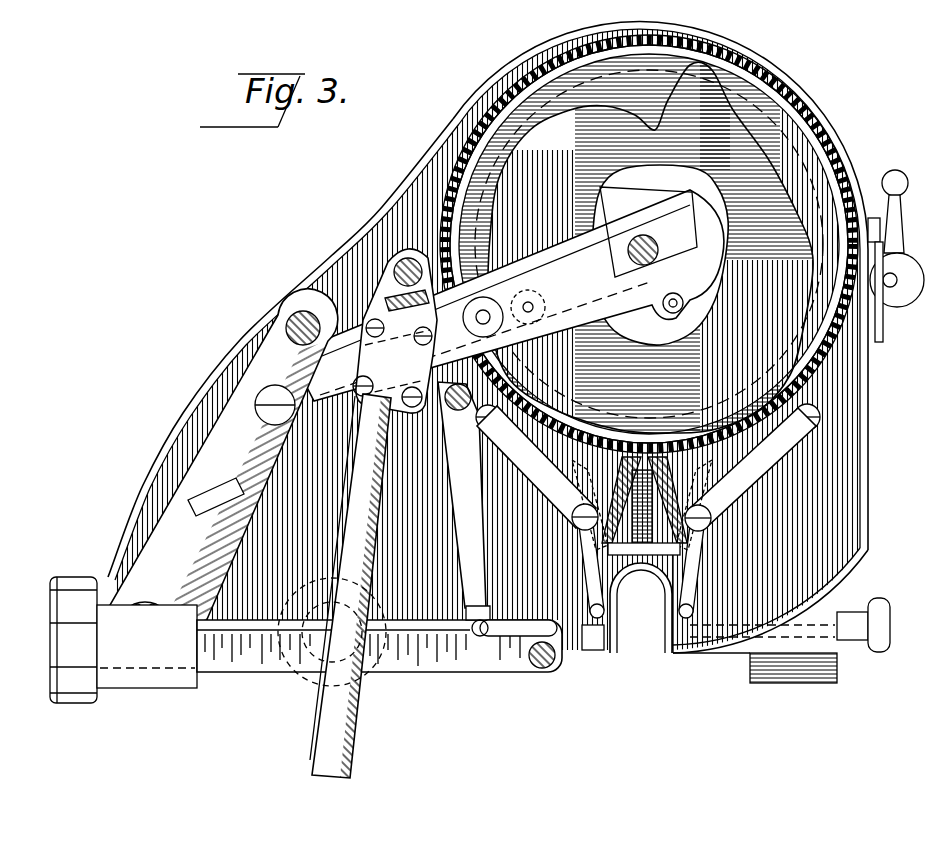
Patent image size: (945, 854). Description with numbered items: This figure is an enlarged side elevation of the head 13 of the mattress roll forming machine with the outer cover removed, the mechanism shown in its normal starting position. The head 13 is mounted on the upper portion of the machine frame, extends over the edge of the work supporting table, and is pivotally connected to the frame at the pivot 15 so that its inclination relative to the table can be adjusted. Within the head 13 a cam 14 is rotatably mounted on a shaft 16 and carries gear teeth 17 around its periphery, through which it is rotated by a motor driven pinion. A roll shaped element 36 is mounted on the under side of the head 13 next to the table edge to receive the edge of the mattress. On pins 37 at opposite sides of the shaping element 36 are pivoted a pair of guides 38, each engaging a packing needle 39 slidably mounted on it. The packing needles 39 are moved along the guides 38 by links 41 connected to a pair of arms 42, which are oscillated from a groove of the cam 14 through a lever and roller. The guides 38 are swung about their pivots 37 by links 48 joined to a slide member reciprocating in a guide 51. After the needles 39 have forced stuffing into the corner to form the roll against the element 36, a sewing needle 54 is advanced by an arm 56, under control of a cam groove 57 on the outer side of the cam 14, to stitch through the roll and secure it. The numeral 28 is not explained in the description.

The head 13 is at (417, 212).
The cam 14 is at (722, 97).
The pivotal connection 15 is at (550, 670).
The shaft 16 is at (643, 240).
The gear teeth 17 is at (448, 167).
The bracket plate 28 is at (383, 243).
The roll shaped element 36 is at (672, 623).
The pins 37 is at (679, 611).
The guides 38 is at (578, 565).
The packing needles 39 is at (676, 562).
The links 41 is at (522, 463).
The arms 42 is at (500, 428).
The links 48 is at (640, 472).
The guide 51 is at (585, 503).
The sewing needle 54 is at (252, 622).
The arm 56 is at (215, 455).
The cam groove 57 is at (477, 122).